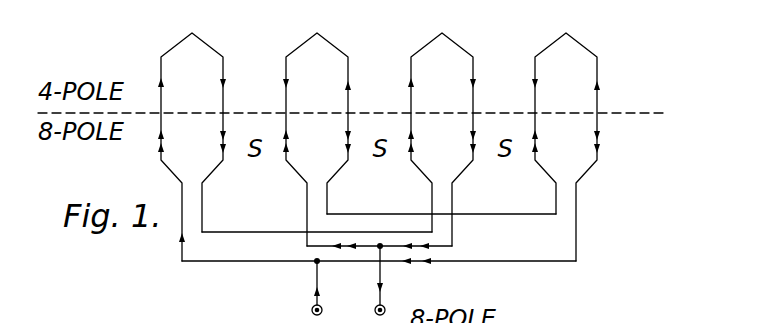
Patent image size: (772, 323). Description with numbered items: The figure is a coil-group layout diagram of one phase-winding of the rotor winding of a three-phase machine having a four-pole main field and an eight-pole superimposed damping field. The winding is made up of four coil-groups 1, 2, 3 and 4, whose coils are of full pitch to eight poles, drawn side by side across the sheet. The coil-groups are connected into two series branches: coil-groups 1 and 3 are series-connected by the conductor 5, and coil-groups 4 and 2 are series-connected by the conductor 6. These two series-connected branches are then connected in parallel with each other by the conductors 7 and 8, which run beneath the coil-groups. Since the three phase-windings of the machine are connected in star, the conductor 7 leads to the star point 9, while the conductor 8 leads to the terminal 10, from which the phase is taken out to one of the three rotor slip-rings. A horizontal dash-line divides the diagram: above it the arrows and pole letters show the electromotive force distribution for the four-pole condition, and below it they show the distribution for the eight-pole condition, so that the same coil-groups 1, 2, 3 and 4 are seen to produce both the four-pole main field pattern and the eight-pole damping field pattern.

The coil-group 1 is at (161, 56).
The coil-group 2 is at (286, 57).
The coil-group 3 is at (411, 57).
The coil-group 4 is at (535, 57).
The conductor 5 is at (247, 231).
The conductor 6 is at (510, 213).
The conductor 7 is at (234, 262).
The conductor 8 is at (444, 254).
The star point 9 is at (311, 306).
The terminal 10 is at (386, 307).